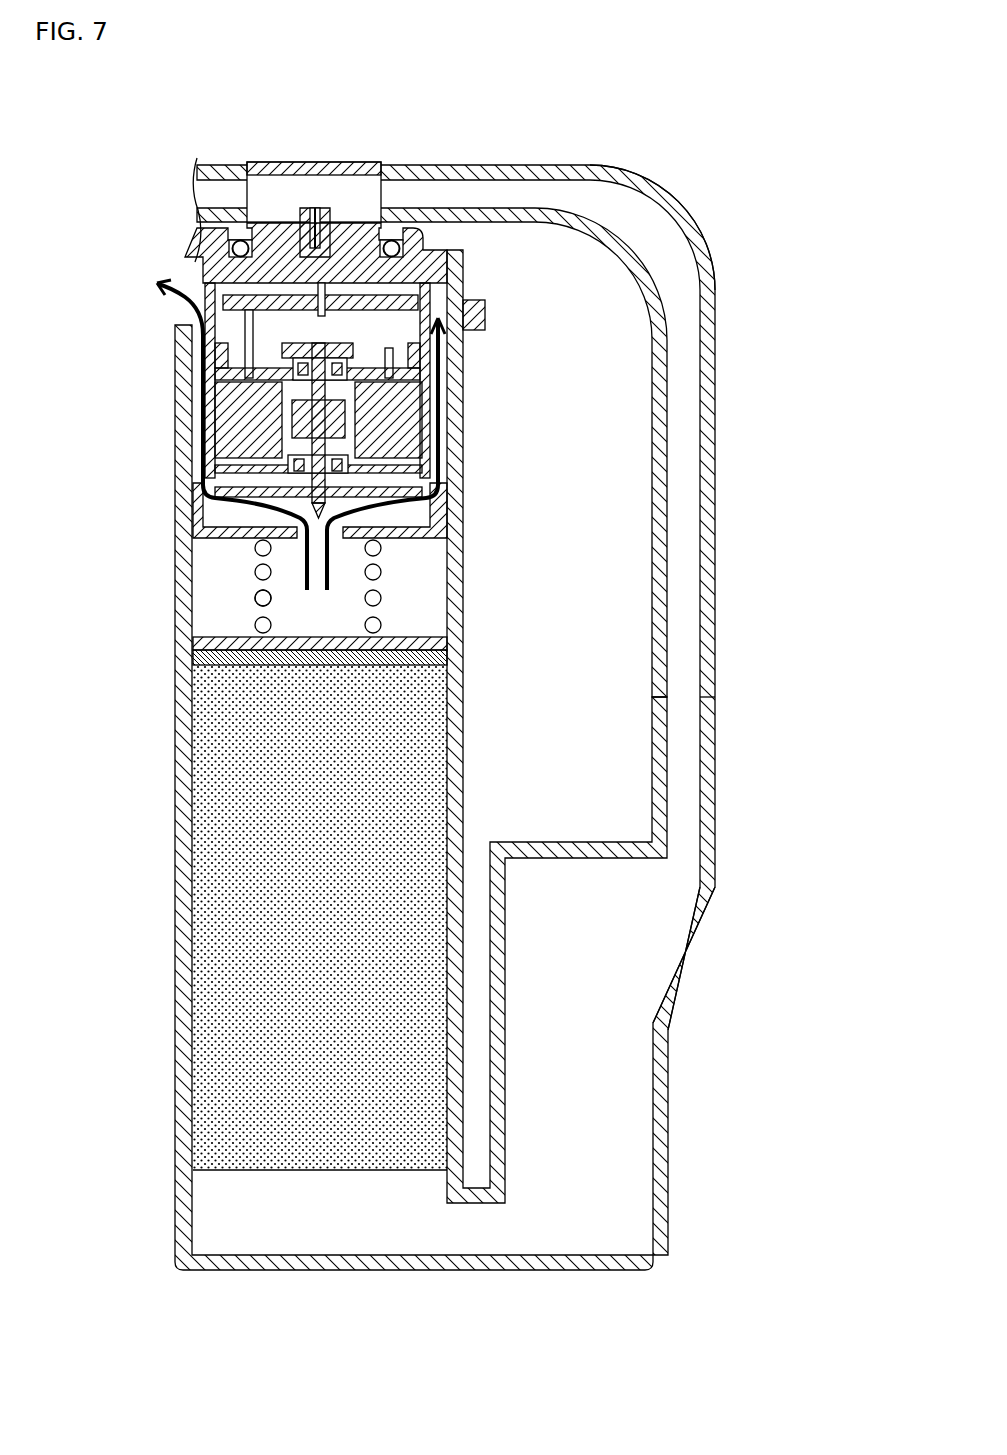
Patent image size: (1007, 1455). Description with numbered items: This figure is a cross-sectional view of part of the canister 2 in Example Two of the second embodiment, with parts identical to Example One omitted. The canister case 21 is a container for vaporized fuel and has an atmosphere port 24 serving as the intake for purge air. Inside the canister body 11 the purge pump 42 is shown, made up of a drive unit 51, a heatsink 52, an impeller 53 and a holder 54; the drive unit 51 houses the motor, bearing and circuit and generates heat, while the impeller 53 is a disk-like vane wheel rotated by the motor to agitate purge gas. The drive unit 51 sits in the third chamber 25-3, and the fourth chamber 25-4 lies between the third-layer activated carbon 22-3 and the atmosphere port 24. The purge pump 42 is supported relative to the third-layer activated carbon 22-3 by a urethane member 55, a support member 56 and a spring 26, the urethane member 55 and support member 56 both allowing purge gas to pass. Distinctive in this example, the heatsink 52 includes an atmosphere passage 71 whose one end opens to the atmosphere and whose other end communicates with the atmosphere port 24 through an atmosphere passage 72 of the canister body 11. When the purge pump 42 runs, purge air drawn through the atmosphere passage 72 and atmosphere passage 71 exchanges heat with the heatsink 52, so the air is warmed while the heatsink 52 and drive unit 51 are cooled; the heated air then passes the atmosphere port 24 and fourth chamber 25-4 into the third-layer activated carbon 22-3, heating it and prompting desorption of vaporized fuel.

The canister 2 is at (626, 93).
The canister body 11 is at (714, 948).
The canister case 21 is at (673, 1005).
The third-layer activated carbon 22-3 is at (300, 1135).
The atmosphere port 24 is at (707, 731).
The third chamber 25-3 is at (413, 572).
The fourth chamber 25-4 is at (585, 1192).
The spring 26 is at (268, 602).
The purge pump 42 is at (462, 391).
The drive unit 51 is at (400, 442).
The heatsink 52 is at (352, 245).
The impeller 53 is at (410, 513).
The holder 54 is at (443, 527).
The urethane member 55 is at (417, 660).
The support member 56 is at (428, 638).
The atmosphere passage 71 is at (350, 205).
The atmosphere passage 72 is at (228, 198).